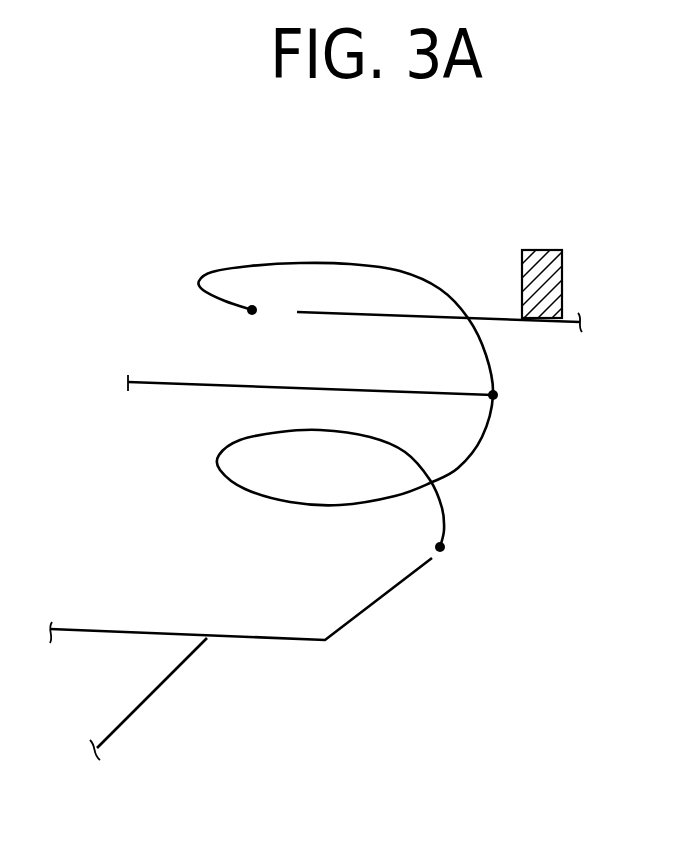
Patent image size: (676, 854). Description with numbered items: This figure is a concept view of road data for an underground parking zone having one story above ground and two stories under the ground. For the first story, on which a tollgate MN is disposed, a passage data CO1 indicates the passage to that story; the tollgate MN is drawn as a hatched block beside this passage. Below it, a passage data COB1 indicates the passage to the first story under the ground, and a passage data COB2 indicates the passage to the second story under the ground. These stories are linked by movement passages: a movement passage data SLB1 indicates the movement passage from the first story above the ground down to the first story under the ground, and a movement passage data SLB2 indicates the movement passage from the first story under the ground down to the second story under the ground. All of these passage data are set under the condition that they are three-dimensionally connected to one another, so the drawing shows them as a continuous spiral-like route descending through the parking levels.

The movement passage data SLB1 is at (323, 265).
The movement passage data SLB2 is at (280, 502).
The passage data CO1 is at (360, 316).
The tollgate MN is at (538, 249).
The passage data COB1 is at (153, 387).
The passage data COB2 is at (355, 612).